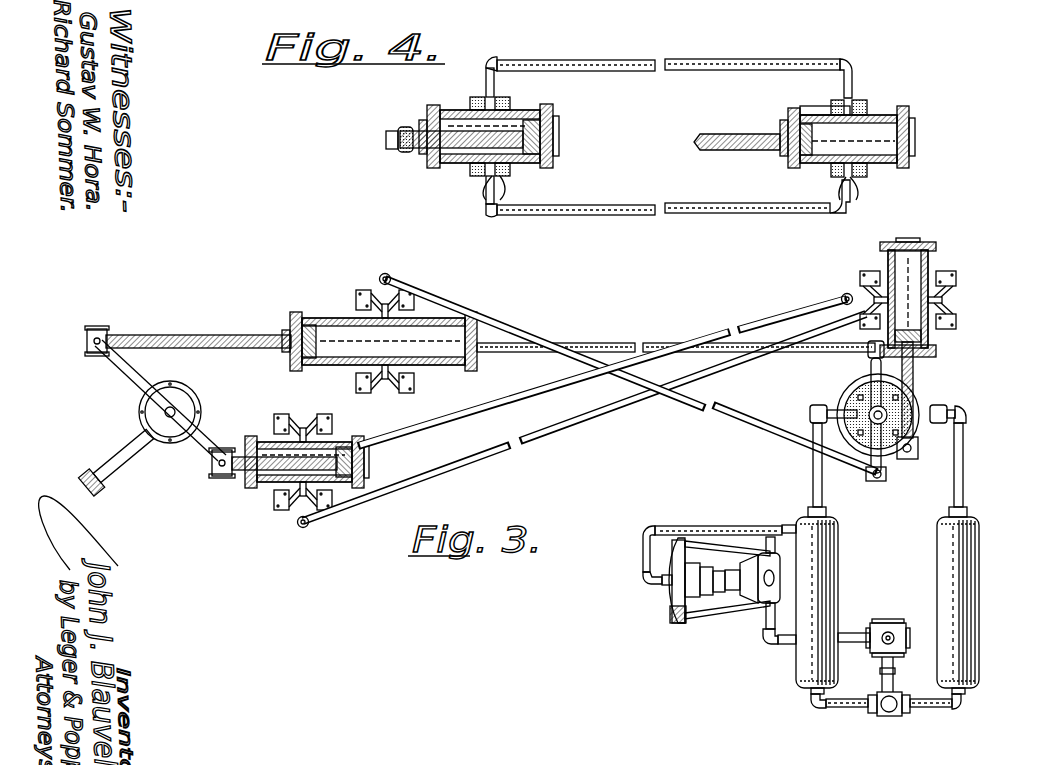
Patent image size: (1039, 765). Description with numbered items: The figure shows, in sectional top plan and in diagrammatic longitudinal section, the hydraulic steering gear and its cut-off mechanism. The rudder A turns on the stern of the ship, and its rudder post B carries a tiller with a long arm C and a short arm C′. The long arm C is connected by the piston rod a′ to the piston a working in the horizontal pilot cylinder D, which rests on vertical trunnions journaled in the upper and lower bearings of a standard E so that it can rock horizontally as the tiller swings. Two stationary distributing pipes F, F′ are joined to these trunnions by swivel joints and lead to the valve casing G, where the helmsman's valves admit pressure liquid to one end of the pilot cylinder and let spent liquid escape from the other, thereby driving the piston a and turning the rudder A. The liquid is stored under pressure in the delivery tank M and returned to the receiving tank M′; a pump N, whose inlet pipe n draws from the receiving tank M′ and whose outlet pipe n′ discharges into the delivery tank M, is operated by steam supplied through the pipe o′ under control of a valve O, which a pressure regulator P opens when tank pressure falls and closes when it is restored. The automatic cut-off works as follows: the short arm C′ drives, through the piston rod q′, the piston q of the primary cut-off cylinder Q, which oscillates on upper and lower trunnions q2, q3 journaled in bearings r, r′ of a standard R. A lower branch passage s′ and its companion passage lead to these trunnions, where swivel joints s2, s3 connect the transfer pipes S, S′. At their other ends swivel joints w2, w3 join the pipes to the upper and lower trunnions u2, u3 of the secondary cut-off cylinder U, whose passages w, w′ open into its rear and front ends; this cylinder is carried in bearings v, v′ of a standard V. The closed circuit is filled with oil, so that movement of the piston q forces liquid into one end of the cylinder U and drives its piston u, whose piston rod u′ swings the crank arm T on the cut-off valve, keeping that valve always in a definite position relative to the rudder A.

In FIG. 3, the rudder A is at (106, 476).
In FIG. 3, the rudder post B is at (176, 406).
In FIG. 3, the long tiller arm C is at (122, 372).
In FIG. 3, the short tiller arm C′ is at (210, 450).
In FIG. 3, the piston rod a′ is at (218, 340).
In FIG. 3, the piston a is at (323, 341).
In FIG. 3, the pilot cylinder D is at (336, 330).
In FIG. 3, the standard E is at (388, 380).
In FIG. 3, the distributing pipe F is at (514, 328).
In FIG. 3, the distributing pipe F′ is at (500, 353).
In FIG. 3, the valve casing G is at (852, 410).
In FIG. 3, the crank arm T is at (882, 476).
In FIG. 4, the primary cut-off cylinder Q is at (554, 130).
In FIG. 3, the primary cut-off cylinder Q is at (366, 463).
In FIG. 4, the piston q is at (540, 150).
In FIG. 3, the piston q is at (344, 478).
In FIG. 4, the piston rod q′ is at (418, 148).
In FIG. 3, the piston rod q′ is at (238, 466).
In FIG. 4, the upper trunnion q2 is at (500, 99).
In FIG. 4, the lower trunnion q3 is at (478, 176).
In FIG. 4, the upper bearing r is at (475, 98).
In FIG. 4, the lower bearing r′ is at (508, 176).
In FIG. 4, the standard R is at (486, 190).
In FIG. 4, the transfer pipe S is at (650, 60).
In FIG. 3, the transfer pipe S is at (486, 468).
In FIG. 4, the transfer pipe S′ is at (646, 205).
In FIG. 3, the transfer pipe S′ is at (460, 420).
In FIG. 4, the lower branch passage s′ is at (520, 150).
In FIG. 4, the swivel joint s2 is at (486, 78).
In FIG. 4, the swivel joint s3 is at (488, 200).
In FIG. 4, the secondary cut-off cylinder U is at (915, 140).
In FIG. 3, the secondary cut-off cylinder U is at (930, 262).
In FIG. 4, the piston u is at (816, 139).
In FIG. 3, the piston u is at (926, 338).
In FIG. 4, the piston rod u′ is at (724, 136).
In FIG. 3, the piston rod u′ is at (914, 382).
In FIG. 4, the upper trunnion u2 is at (858, 102).
In FIG. 4, the lower trunnion u3 is at (860, 177).
In FIG. 3, the standard V is at (950, 300).
In FIG. 4, the upper bearing v is at (838, 100).
In FIG. 4, the lower bearing v′ is at (830, 172).
In FIG. 4, the upper branch passage w is at (810, 110).
In FIG. 4, the lower branch passage w′ is at (890, 163).
In FIG. 4, the swivel joint w2 is at (856, 100).
In FIG. 4, the swivel joint w3 is at (852, 182).
In FIG. 3, the delivery tank M is at (838, 540).
In FIG. 3, the receiving tank M′ is at (965, 583).
In FIG. 3, the pump inlet pipe n is at (710, 526).
In FIG. 3, the pump outlet pipe n′ is at (846, 709).
In FIG. 3, the pump N is at (890, 692).
In FIG. 3, the valve O is at (769, 583).
In FIG. 3, the pump supply pipe o′ is at (782, 646).
In FIG. 3, the pressure regulator P is at (660, 612).